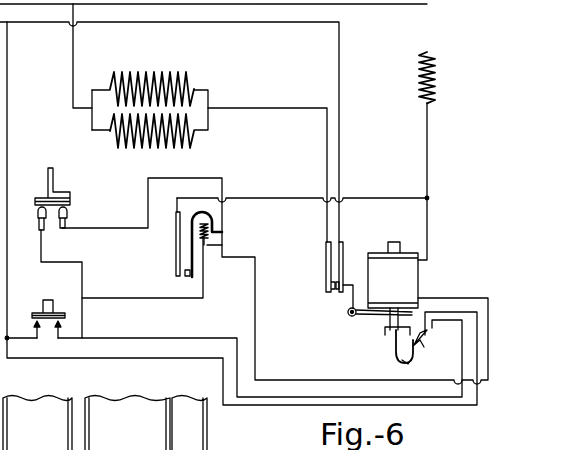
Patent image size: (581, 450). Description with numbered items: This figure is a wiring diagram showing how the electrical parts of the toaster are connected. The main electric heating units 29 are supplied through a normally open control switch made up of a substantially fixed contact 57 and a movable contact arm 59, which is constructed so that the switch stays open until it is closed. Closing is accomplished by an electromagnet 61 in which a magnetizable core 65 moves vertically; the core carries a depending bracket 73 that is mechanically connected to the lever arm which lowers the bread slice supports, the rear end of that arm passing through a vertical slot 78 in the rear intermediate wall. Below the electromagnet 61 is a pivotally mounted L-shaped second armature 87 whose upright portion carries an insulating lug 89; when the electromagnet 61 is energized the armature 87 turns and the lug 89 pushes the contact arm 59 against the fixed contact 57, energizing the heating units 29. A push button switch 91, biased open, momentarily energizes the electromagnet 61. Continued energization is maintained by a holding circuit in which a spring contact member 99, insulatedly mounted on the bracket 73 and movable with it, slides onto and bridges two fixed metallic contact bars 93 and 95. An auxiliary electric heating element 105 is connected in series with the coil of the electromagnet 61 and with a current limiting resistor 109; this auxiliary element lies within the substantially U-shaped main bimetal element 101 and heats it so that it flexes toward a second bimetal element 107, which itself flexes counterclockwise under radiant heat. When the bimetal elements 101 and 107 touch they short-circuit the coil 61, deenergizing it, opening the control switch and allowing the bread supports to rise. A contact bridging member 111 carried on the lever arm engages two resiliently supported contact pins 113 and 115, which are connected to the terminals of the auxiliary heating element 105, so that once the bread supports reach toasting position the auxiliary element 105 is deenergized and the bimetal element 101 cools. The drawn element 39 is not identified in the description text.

The electric heating units 29 is at (142, 72).
The current limiting resistor 109 is at (439, 80).
The contact bridging member 111 is at (70, 203).
The contact pin 113 is at (37, 213).
The contact pin 115 is at (68, 217).
The second bimetal element 107 is at (176, 258).
The auxiliary electric heating element 105 is at (222, 245).
The main bimetal element 101 is at (195, 262).
The push button switch 91 is at (38, 310).
The fixed contact 57 is at (325, 259).
The movable contact arm 59 is at (343, 247).
The lug 89 is at (344, 277).
The electromagnet 61 is at (393, 275).
The second armature 87 is at (347, 305).
The magnetizable core 65 is at (387, 321).
The depending bracket 73 is at (398, 342).
The spring contact member 99 is at (405, 362).
The metallic contact bar 93 is at (426, 333).
The metallic contact bar 95 is at (421, 346).
The vertical slot 78 is at (7, 427).
The container 39 is at (82, 430).